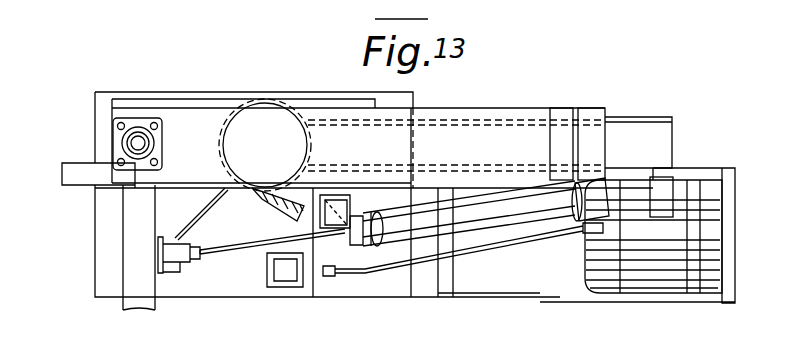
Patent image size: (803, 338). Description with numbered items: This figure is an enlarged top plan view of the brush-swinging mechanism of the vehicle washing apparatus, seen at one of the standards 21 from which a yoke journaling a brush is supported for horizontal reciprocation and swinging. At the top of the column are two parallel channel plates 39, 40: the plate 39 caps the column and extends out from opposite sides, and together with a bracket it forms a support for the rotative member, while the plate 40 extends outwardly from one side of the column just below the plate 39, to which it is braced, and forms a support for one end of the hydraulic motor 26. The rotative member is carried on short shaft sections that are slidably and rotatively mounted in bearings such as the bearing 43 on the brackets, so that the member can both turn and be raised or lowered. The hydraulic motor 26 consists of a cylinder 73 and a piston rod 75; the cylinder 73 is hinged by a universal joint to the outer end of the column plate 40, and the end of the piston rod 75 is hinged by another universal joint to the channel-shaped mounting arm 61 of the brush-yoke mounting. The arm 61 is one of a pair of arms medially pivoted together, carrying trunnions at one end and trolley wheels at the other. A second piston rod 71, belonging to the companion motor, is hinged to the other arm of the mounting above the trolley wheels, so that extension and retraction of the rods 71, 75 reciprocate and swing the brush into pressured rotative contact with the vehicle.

The standard 21 is at (242, 230).
The hydraulic motor 26 is at (470, 222).
The channel plate 39 is at (481, 130).
The channel plate 40 is at (665, 137).
The bearing 43 is at (103, 190).
The channel-shaped arm 61 is at (147, 297).
The piston rod 71 is at (635, 197).
The cylinder 73 is at (518, 222).
The piston rod 75 is at (232, 249).